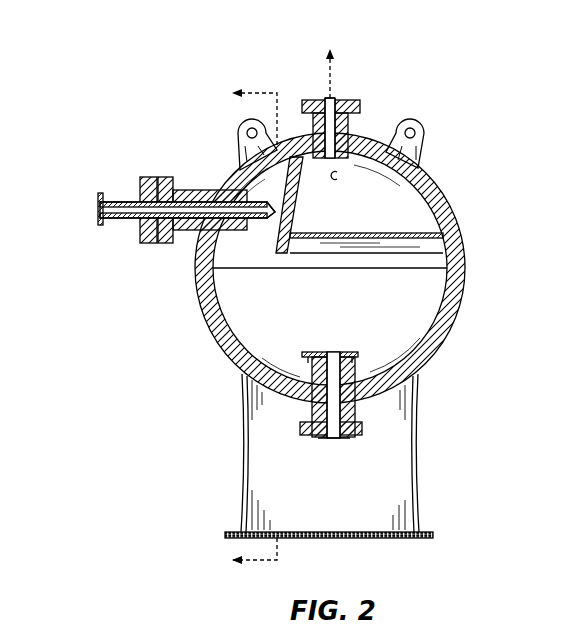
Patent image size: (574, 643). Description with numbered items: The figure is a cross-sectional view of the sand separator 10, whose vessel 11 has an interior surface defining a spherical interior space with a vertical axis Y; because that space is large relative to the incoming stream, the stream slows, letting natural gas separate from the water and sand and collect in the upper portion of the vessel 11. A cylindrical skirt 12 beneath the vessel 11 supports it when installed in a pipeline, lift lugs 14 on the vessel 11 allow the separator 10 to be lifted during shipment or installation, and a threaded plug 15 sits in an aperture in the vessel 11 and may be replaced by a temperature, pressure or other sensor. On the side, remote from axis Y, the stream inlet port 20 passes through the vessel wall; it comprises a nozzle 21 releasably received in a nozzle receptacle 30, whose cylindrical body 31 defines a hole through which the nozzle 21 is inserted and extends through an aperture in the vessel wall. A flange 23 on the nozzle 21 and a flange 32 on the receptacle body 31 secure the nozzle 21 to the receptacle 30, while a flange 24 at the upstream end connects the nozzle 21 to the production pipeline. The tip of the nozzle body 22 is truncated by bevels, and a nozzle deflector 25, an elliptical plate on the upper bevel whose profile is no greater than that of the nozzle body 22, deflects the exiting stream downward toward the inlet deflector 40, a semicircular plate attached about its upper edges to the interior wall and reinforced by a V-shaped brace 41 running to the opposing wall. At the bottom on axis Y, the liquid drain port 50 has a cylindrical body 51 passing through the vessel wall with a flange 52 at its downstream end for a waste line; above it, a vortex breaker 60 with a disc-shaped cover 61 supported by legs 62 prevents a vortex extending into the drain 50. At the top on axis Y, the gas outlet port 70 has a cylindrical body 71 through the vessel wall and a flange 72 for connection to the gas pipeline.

The sand separator 10 is at (188, 322).
The vessel 11 is at (448, 207).
The cylindrical skirt 12 is at (398, 492).
The lift lugs 14 is at (240, 132).
The threaded plug 15 is at (340, 178).
The stream inlet port 20 is at (153, 205).
The nozzle 21 is at (121, 228).
The nozzle body 22 is at (194, 234).
The flange 23 is at (150, 245).
The flange 24 is at (100, 207).
The nozzle deflector 25 is at (247, 242).
The nozzle receptacle 30 is at (165, 175).
The cylindrical body 31 is at (190, 180).
The flange 32 is at (165, 245).
The inlet deflector 40 is at (300, 200).
The V-shaped brace 41 is at (306, 240).
The liquid drain port 50 is at (381, 462).
The cylindrical body 51 is at (310, 400).
The flange 52 is at (305, 436).
The vortex breaker 60 is at (359, 391).
The disc-shaped cover 61 is at (344, 352).
The legs 62 is at (312, 356).
The gas outlet port 70 is at (327, 98).
The cylindrical body 71 is at (355, 130).
The flange 72 is at (352, 100).